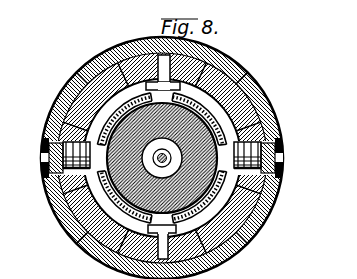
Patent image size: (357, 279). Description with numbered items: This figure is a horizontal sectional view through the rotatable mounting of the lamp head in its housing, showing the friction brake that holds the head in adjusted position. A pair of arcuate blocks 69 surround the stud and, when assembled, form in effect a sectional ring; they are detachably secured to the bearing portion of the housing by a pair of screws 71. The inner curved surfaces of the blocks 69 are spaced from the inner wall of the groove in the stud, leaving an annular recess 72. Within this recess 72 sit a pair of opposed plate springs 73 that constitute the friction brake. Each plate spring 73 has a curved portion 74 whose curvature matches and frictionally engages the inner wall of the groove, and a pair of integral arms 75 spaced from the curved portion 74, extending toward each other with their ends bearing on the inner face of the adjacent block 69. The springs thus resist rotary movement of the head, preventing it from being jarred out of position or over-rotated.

The arcuate blocks 69 is at (114, 66).
The annular recess 72 is at (127, 62).
The plate springs 73 is at (78, 72).
The curved portion 74 is at (76, 234).
The integral arms 75 is at (63, 83).
The screws 71 is at (36, 133).